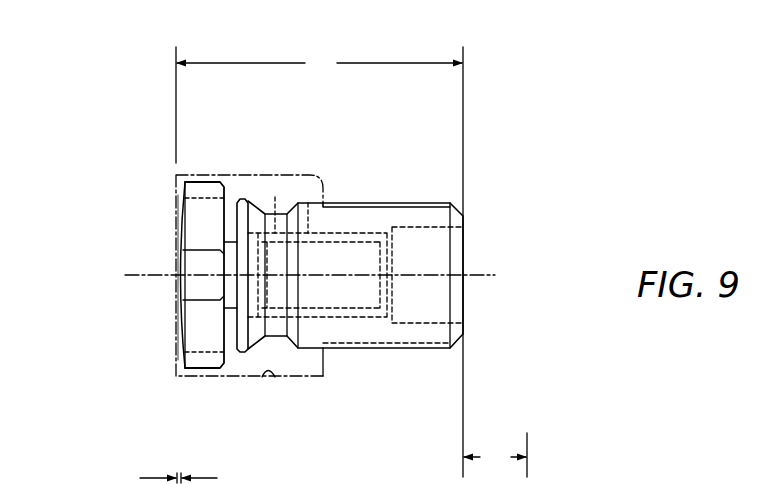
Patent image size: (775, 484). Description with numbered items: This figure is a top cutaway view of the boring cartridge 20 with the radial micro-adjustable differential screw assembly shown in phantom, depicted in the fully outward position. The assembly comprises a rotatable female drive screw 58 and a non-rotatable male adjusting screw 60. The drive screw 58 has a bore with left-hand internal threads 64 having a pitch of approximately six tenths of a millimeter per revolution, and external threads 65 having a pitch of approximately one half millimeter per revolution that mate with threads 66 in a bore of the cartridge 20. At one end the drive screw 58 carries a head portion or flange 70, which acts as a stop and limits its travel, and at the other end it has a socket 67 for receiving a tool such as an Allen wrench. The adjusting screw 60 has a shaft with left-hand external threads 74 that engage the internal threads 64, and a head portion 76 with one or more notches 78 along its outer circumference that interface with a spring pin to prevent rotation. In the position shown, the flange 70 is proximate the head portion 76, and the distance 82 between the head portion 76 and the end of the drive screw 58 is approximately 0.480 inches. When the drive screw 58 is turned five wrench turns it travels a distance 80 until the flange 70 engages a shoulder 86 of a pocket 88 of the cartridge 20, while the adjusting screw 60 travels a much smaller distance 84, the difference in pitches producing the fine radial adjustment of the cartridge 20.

The boring cartridge 20 is at (89, 101).
The drive screw 58 is at (340, 191).
The adjusting screw 60 is at (166, 226).
The internal threads 64 is at (307, 203).
The external threads 65 is at (431, 203).
The threads 66 is at (350, 233).
The socket 67 is at (465, 238).
The flange 70 is at (247, 199).
The external threads 74 is at (275, 197).
The head portion 76 is at (176, 239).
The notches 78 is at (195, 287).
The distance 80 is at (495, 455).
The distance 82 is at (319, 262).
The distance 84 is at (191, 475).
The shoulder 86 is at (323, 360).
The pocket 88 is at (271, 376).